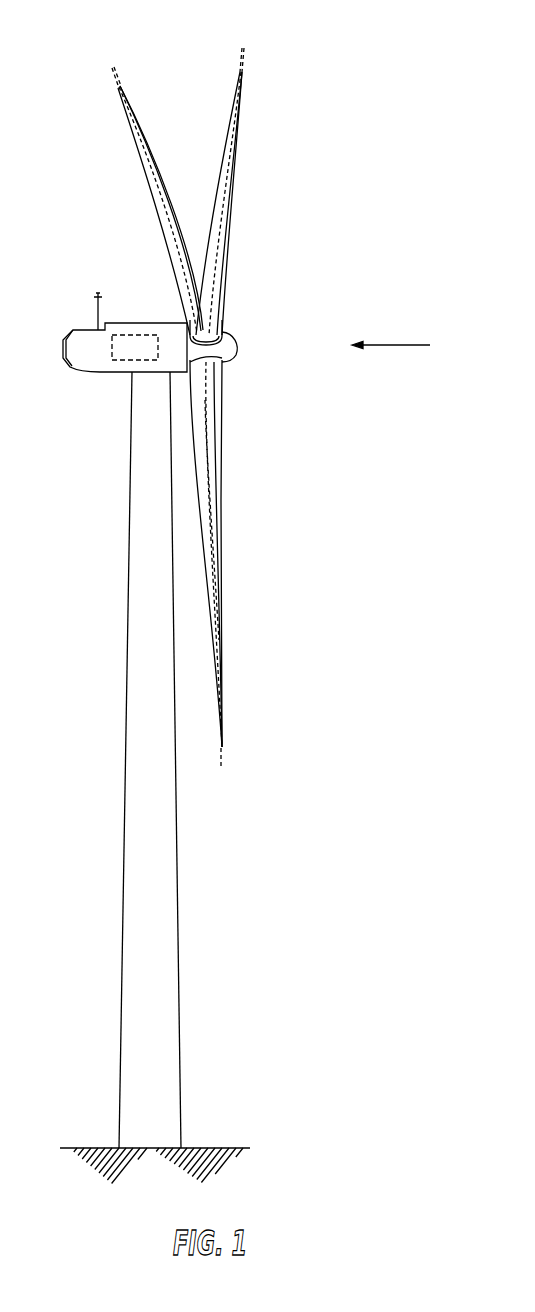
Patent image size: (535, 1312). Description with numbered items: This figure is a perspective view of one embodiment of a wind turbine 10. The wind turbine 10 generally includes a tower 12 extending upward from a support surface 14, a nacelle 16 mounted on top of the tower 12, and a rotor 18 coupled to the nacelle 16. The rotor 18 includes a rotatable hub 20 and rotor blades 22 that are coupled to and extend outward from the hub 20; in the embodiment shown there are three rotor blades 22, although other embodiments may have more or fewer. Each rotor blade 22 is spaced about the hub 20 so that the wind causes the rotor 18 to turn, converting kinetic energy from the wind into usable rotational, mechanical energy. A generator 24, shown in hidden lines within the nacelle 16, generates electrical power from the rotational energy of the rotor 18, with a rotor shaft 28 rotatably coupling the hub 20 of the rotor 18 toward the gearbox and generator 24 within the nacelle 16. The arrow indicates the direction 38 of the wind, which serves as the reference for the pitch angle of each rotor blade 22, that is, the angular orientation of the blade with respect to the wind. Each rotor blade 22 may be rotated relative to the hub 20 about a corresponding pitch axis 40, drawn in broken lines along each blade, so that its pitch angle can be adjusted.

The wind turbine 10 is at (406, 177).
The tower 12 is at (160, 823).
The support surface 14 is at (100, 1148).
The nacelle 16 is at (105, 373).
The rotor 18 is at (290, 270).
The rotatable hub 20 is at (233, 342).
The rotor blades 22 is at (158, 183).
The generator 24 is at (143, 335).
The rotor shaft 28 is at (215, 462).
The direction of the wind 38 is at (397, 345).
The pitch axis 40 is at (112, 82).